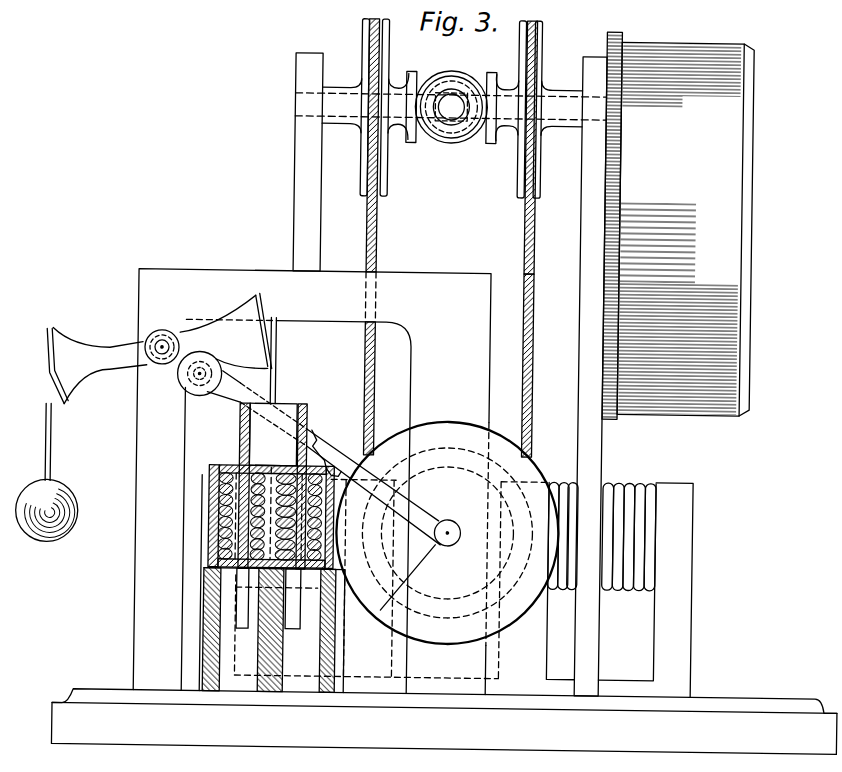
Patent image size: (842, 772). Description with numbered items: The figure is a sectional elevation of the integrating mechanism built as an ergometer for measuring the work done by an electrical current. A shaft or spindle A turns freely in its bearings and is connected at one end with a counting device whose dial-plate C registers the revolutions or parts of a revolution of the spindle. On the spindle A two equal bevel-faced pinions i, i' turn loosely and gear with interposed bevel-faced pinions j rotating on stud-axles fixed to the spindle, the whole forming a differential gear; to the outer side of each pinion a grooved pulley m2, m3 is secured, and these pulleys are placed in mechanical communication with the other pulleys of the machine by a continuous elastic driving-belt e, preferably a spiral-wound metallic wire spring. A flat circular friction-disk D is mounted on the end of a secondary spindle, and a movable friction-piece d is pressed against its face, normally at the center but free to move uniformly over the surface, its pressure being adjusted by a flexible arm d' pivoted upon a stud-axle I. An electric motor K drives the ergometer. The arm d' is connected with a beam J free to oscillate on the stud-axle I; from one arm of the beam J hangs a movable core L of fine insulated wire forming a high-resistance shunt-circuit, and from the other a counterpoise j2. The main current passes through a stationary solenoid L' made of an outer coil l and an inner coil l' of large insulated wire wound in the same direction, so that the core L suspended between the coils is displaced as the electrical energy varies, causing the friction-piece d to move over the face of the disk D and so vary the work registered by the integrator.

The shaft or spindle A is at (556, 103).
The grooved pulley m3 is at (372, 136).
The grooved pulley m2 is at (531, 138).
The continuous driving-belt e is at (458, 339).
The bevel-faced pinion i' is at (409, 97).
The bevel-faced pinion i is at (491, 98).
The interposed bevel-faced pinion j is at (450, 120).
The dial-plate C is at (678, 226).
The electric motor K is at (628, 483).
The friction-disk D is at (447, 532).
The friction-piece d is at (450, 545).
The flexible arm or spring d' is at (333, 453).
The beam J is at (159, 348).
The stud-axle I is at (161, 347).
The counterpoise j2 is at (47, 481).
The movable core L is at (283, 426).
The stationary solenoid L' is at (256, 516).
The outer coil l is at (247, 578).
The inner coil l' is at (270, 502).